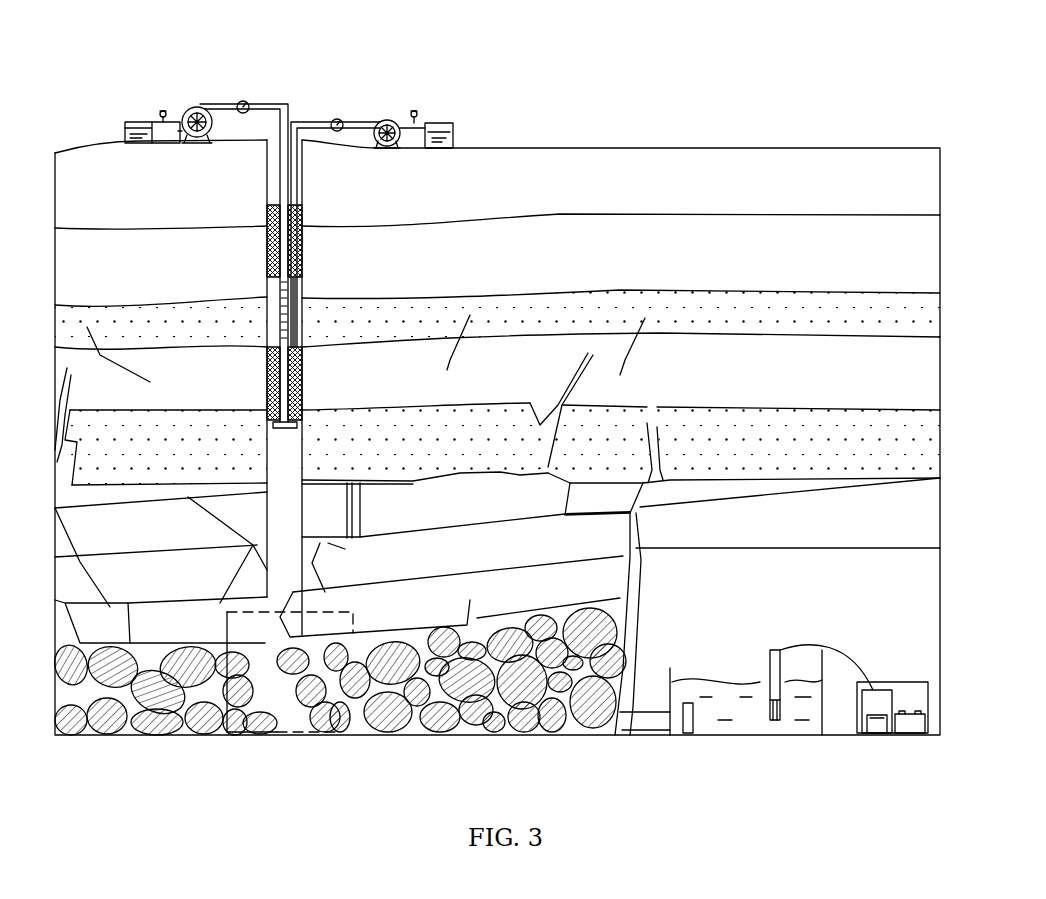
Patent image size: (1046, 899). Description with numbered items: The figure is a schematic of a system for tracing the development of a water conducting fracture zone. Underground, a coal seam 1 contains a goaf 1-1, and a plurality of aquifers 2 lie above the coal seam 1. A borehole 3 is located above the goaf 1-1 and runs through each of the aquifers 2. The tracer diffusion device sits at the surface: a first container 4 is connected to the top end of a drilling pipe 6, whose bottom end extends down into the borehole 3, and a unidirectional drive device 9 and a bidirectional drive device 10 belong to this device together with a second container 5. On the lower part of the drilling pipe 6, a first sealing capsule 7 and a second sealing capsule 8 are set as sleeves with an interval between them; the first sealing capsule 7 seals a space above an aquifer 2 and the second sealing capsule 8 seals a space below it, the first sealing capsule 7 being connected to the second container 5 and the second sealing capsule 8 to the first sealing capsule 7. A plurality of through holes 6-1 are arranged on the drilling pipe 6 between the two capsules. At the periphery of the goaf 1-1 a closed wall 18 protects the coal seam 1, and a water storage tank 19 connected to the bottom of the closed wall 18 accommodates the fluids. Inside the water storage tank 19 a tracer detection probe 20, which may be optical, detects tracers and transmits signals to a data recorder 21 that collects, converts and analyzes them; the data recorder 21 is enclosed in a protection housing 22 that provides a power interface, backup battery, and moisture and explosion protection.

The coal seam 1 is at (155, 718).
The goaf 1-1 is at (225, 607).
The aquifer 2 is at (748, 310).
The borehole 3 is at (304, 520).
The first container 4 is at (140, 120).
The second container 5 is at (457, 122).
The drilling pipe 6 is at (282, 103).
The through hole 6-1 is at (280, 305).
The first sealing capsule 7 is at (265, 246).
The second sealing capsule 8 is at (265, 377).
The unidirectional drive device 9 is at (199, 105).
The bidirectional drive device 10 is at (390, 118).
The closed wall 18 is at (647, 627).
The water storage tank 19 is at (820, 713).
The tracer detection probe 20 is at (767, 670).
The data recorder 21 is at (867, 720).
The protection housing 22 is at (910, 678).